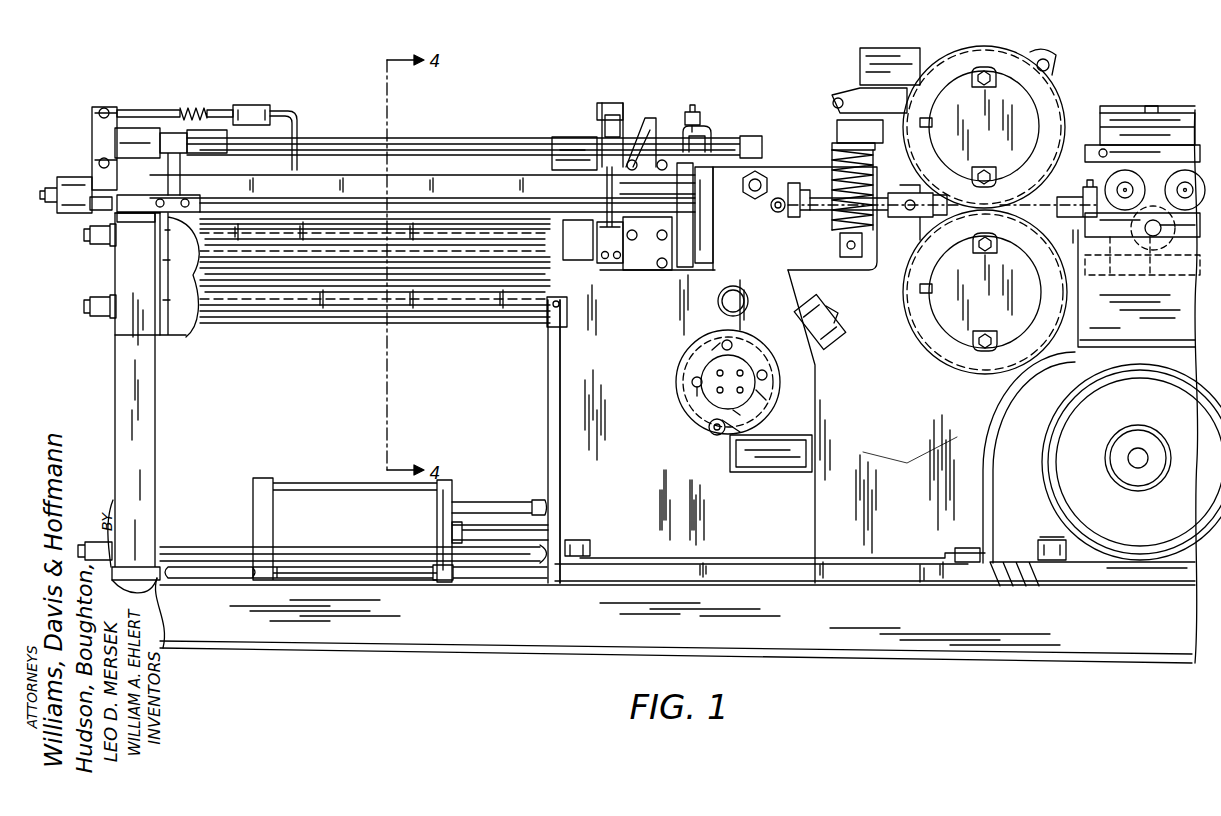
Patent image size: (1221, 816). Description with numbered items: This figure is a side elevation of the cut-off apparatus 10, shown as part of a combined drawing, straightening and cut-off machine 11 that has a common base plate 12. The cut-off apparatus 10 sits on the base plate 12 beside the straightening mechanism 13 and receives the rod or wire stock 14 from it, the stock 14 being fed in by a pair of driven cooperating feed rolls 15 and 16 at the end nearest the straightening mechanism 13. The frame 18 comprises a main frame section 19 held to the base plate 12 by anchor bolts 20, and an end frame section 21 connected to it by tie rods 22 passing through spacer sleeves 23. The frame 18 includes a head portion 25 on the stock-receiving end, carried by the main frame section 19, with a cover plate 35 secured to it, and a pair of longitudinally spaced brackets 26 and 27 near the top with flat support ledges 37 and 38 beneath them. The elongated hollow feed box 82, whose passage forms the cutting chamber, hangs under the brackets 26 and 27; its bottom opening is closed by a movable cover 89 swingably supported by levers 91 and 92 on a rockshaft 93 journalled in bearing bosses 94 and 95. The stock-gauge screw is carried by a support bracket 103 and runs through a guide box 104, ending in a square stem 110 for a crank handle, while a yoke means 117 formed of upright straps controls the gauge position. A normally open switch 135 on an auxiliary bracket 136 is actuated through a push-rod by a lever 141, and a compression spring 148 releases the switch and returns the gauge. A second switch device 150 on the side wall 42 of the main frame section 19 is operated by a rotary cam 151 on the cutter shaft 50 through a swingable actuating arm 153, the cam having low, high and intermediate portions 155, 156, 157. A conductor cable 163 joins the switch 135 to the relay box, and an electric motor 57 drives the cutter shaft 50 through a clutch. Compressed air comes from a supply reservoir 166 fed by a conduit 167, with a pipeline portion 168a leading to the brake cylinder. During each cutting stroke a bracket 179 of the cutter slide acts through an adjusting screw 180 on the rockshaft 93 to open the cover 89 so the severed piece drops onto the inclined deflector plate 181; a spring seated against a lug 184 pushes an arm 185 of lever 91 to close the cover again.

The cut-off apparatus 10 is at (645, 324).
The combined drawing, straightening and cut-off machine 11 is at (1173, 330).
The base plate 12 is at (947, 647).
The straightening mechanism 13 is at (1157, 350).
The rod or wire stock 14 is at (1037, 207).
The feed roll 15 is at (1067, 110).
The feed roll 16 is at (1027, 350).
The frame 18 is at (540, 396).
The main frame section 19 is at (712, 550).
The anchor bolts 20 is at (588, 541).
The end frame section 21 is at (148, 441).
The tie rods 22 is at (96, 310).
The spacer sleeves 23 is at (183, 550).
The head portion 25 is at (782, 167).
The bracket 26 is at (567, 137).
The bracket 27 is at (125, 138).
The cover plate 35 is at (705, 197).
The support ledge 37 is at (580, 228).
The support ledge 38 is at (140, 223).
The side wall 42 is at (577, 444).
The cutter shaft 50 is at (747, 397).
The electric motor 57 is at (1050, 435).
The feed box 82 is at (417, 185).
The movable cover 89 is at (340, 204).
The lever 91 is at (588, 197).
The lever 92 is at (187, 188).
The rockshaft 93 is at (462, 145).
The bearing boss 94 is at (558, 136).
The bearing boss 95 is at (138, 137).
The support bracket 103 is at (90, 213).
The guide box 104 is at (142, 218).
The square stem 110 is at (57, 183).
The yoke means 117 is at (672, 223).
The switch 135 is at (252, 110).
The auxiliary bracket 136 is at (223, 137).
The lever 141 is at (108, 133).
The compression spring 148 is at (183, 107).
The second switch device 150 is at (765, 460).
The rotary cam 151 is at (743, 395).
The actuating arm 153 is at (727, 435).
The low cam portion 155 is at (752, 360).
The high cam portion 156 is at (675, 385).
The intermediate cam portion 157 is at (717, 340).
The conductor cable 163 is at (303, 120).
The supply reservoir 166 is at (333, 490).
The conduit 167 is at (528, 531).
The pipeline portion 168a is at (500, 507).
The bracket 179 is at (707, 126).
The adjusting screw 180 is at (690, 113).
The inclined deflector plate 181 is at (186, 322).
The lug 184 is at (633, 132).
The arm 185 is at (597, 130).